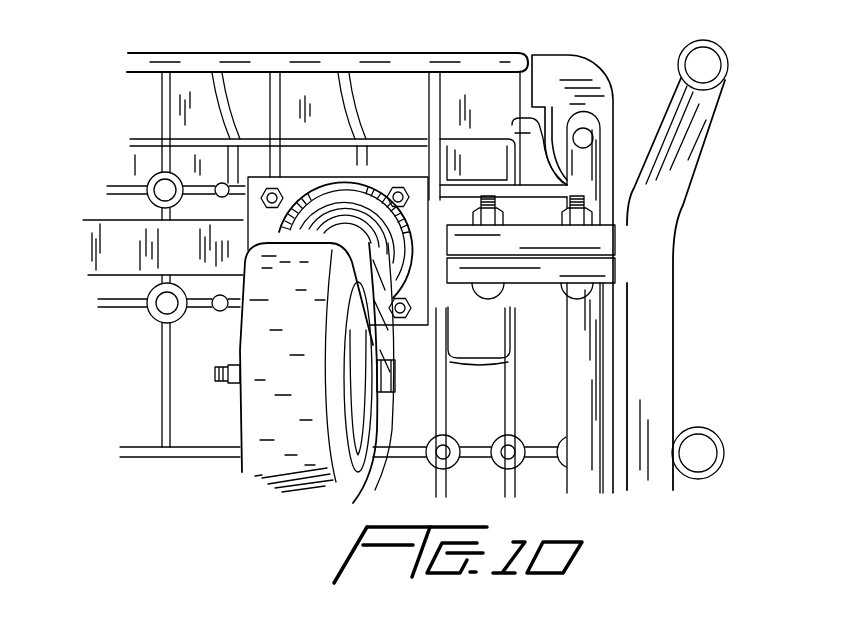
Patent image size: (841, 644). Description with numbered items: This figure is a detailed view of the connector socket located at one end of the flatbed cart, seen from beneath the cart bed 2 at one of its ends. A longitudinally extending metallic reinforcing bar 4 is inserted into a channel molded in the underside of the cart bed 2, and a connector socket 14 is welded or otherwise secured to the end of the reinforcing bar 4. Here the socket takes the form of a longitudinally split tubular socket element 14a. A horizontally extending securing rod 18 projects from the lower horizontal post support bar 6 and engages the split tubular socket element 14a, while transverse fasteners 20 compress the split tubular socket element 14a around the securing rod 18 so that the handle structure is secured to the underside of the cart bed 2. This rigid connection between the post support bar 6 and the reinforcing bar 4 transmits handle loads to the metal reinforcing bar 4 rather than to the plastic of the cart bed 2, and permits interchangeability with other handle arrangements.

The cart bed 2 is at (314, 54).
The reinforcing bars 4 is at (97, 250).
The lower horizontal post support bars 6 is at (673, 371).
The connector sockets 14 is at (487, 196).
The split tubular socket elements 14a is at (597, 242).
The securing rods 18 is at (613, 270).
The transverse fasteners 20 is at (585, 207).